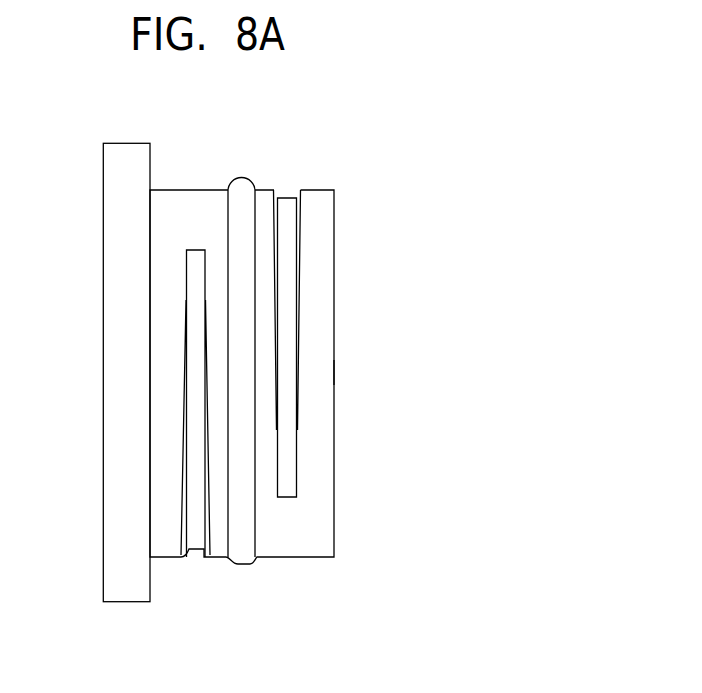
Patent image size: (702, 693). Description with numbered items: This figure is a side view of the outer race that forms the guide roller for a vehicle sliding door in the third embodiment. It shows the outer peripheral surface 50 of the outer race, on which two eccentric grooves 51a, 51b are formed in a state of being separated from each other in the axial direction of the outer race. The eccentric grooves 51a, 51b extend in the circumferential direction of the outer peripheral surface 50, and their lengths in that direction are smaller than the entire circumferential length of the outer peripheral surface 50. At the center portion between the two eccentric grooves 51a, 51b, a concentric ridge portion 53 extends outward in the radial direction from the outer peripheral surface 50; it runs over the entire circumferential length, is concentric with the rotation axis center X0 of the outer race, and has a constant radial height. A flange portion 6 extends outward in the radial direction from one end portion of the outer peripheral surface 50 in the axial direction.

The flange portion 6 is at (110, 182).
The outer peripheral surface 50 is at (155, 188).
The concentric ridge portion 53 is at (247, 182).
The eccentric groove 51a is at (288, 197).
The eccentric groove 51b is at (195, 558).
The rotation axis center X0 is at (336, 374).